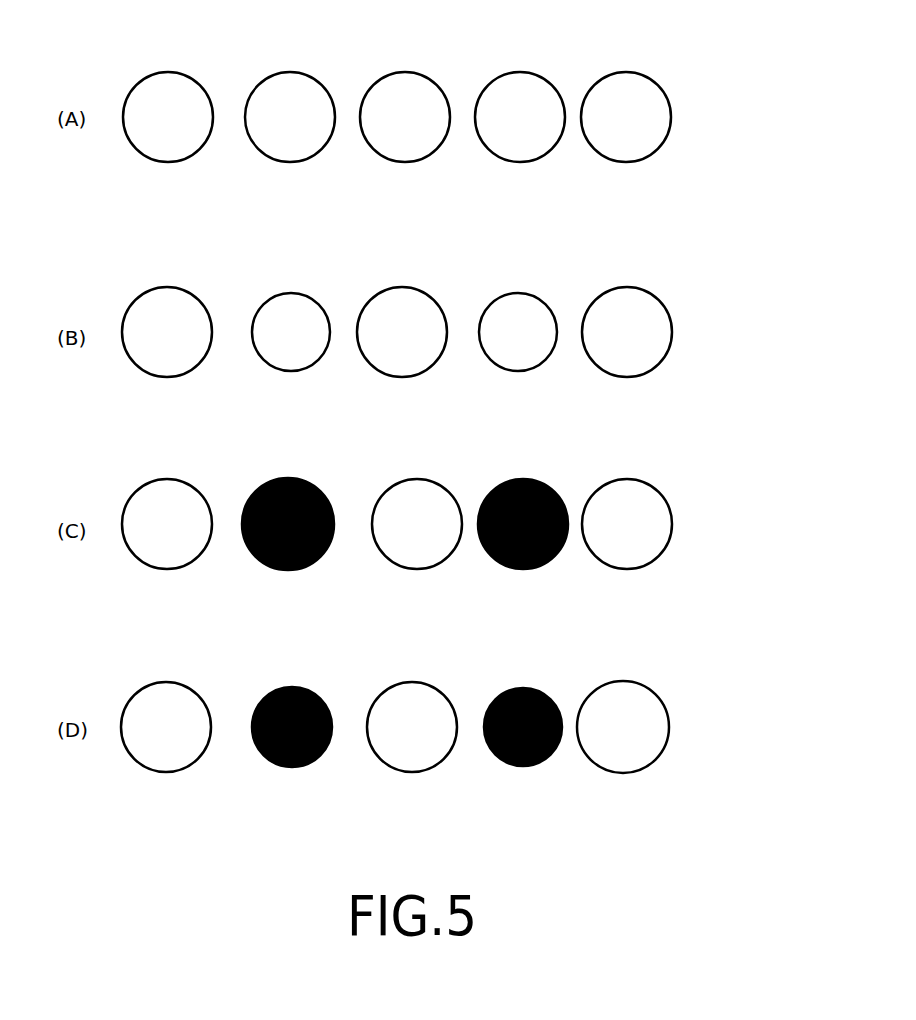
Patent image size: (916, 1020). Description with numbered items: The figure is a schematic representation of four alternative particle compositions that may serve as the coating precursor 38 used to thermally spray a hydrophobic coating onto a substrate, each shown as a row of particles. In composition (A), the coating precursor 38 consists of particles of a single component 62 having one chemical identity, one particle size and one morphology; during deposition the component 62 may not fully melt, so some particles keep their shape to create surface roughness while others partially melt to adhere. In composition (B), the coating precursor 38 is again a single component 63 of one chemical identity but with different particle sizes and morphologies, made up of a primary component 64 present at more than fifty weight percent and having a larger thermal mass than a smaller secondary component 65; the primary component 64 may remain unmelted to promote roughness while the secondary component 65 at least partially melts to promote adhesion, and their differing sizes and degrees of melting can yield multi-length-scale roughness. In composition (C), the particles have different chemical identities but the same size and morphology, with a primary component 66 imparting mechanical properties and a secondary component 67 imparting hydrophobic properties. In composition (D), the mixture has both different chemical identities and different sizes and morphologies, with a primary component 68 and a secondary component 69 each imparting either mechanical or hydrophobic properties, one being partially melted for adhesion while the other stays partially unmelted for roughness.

The coating precursor 38 is at (737, 78).
The single component 62 is at (187, 75).
The single component 63 is at (192, 293).
The primary component 64 is at (177, 373).
The secondary component 65 is at (300, 368).
The primary component 66 is at (170, 568).
The secondary component 67 is at (550, 483).
The primary component 68 is at (193, 690).
The secondary component 69 is at (530, 690).